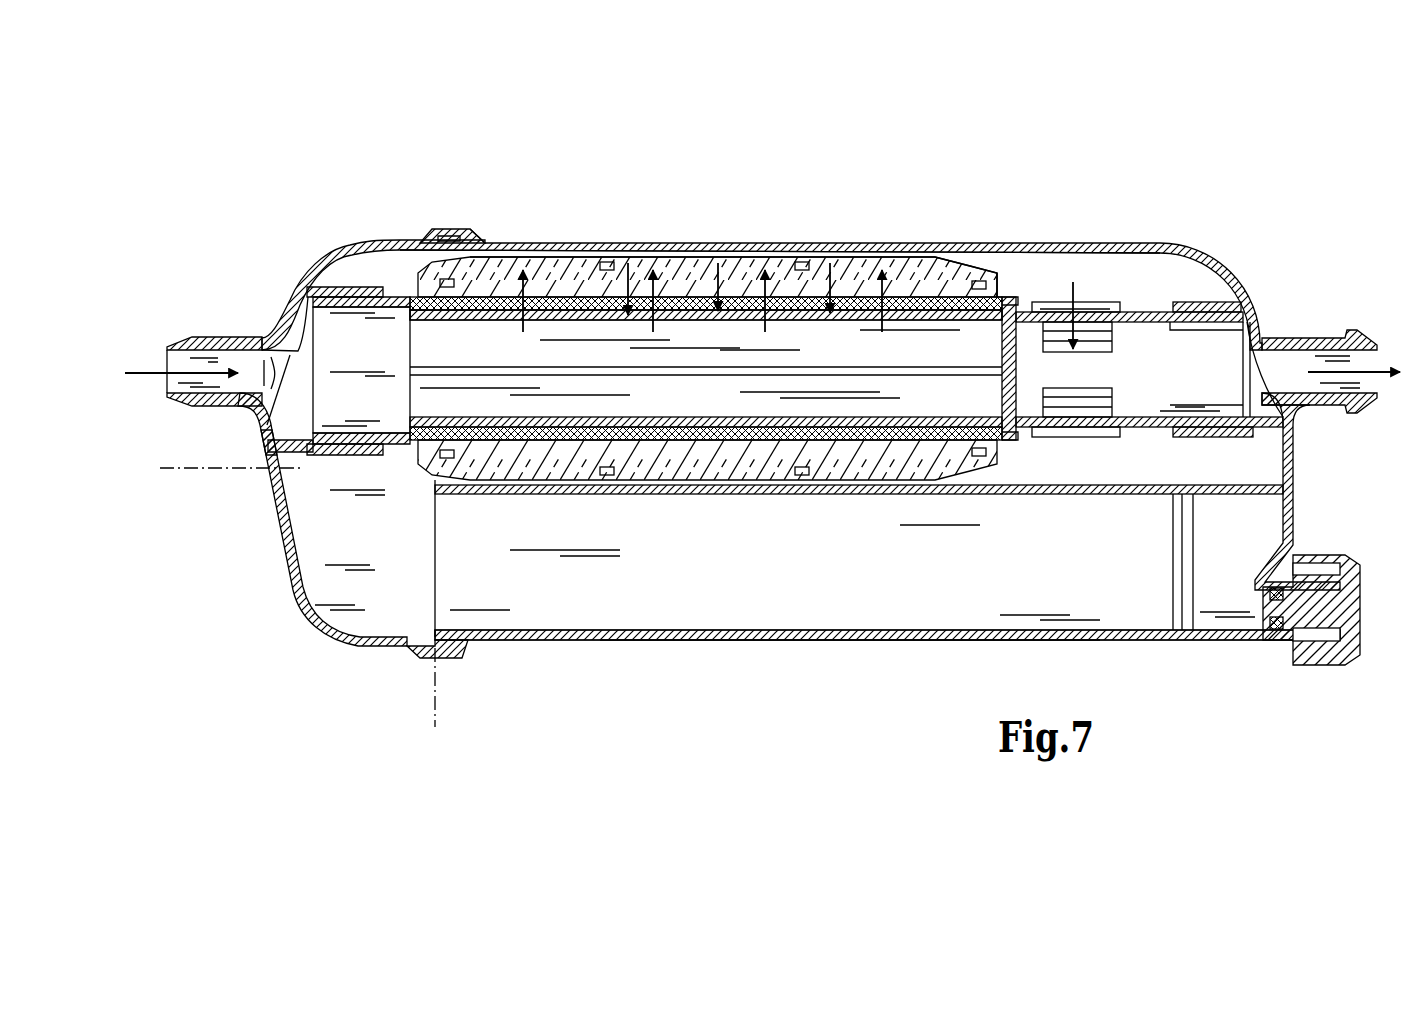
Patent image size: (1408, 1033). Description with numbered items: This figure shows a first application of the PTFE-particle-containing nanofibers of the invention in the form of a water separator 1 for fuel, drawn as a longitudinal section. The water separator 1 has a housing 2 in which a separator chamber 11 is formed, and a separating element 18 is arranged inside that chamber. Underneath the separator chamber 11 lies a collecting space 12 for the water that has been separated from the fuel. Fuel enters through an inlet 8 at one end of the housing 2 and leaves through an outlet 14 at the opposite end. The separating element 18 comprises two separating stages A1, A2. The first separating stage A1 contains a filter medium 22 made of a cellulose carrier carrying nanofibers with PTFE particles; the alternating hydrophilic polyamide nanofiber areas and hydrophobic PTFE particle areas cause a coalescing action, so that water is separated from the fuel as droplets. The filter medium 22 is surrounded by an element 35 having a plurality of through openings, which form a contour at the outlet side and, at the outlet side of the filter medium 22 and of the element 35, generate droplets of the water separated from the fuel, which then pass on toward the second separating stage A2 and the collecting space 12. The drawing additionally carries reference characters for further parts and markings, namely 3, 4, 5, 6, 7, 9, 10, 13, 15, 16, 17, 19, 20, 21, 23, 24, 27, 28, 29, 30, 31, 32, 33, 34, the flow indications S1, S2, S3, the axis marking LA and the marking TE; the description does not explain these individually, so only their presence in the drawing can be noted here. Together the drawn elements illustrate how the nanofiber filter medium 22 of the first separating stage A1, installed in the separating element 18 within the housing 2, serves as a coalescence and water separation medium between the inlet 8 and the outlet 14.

The water separator 1 is at (406, 661).
The housing 2 is at (855, 246).
The housing wall 3 is at (905, 246).
The inlet end cap 4 is at (260, 466).
The outlet end wall 5 is at (1303, 479).
The lower shell wall 6 is at (348, 649).
The housing bottom 7 is at (848, 647).
The inlet 8 is at (244, 344).
The inlet nozzle 9 is at (300, 452).
The separating plate 10 is at (925, 496).
The separator chamber 11 is at (1188, 463).
The collecting space 12 is at (952, 600).
The inlet chamber 13 is at (378, 547).
The outlet 14 is at (1331, 340).
The ring 15 is at (1212, 300).
The bottom wall 16 is at (758, 642).
The plug 17 is at (1302, 620).
The separating element 18 is at (1020, 292).
The filter end 19 is at (1000, 290).
The filter screen 20 is at (720, 300).
The filter element 21 is at (621, 262).
The filter medium 22 is at (752, 316).
The filter surface 23 is at (862, 268).
The lower filter element 24 is at (882, 462).
The flow body 27 is at (1034, 437).
The ring 28 is at (1128, 300).
The support ring 29 is at (1086, 412).
The lower flow body 30 is at (1062, 430).
The central tube 31 is at (760, 405).
The collar 32 is at (344, 290).
The ridge 33 is at (455, 238).
The ridge flank 34 is at (484, 232).
The element with through openings 35 is at (966, 262).
The inlet flow S1 is at (147, 362).
The filter flow S2 is at (538, 262).
The outlet flow S3 is at (1075, 282).
The first separating stage A1 is at (587, 256).
The second separating stage A2 is at (1127, 456).
The longitudinal axis LA is at (186, 470).
The parting plane TE is at (437, 720).